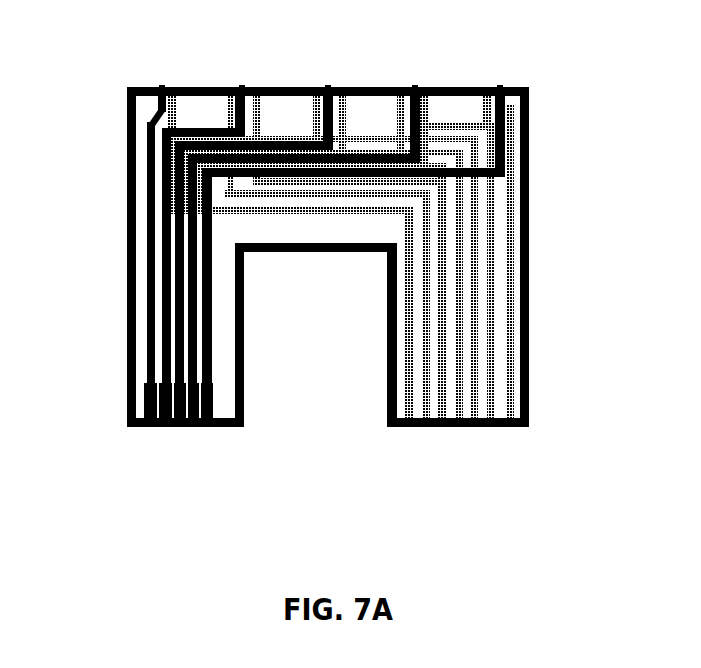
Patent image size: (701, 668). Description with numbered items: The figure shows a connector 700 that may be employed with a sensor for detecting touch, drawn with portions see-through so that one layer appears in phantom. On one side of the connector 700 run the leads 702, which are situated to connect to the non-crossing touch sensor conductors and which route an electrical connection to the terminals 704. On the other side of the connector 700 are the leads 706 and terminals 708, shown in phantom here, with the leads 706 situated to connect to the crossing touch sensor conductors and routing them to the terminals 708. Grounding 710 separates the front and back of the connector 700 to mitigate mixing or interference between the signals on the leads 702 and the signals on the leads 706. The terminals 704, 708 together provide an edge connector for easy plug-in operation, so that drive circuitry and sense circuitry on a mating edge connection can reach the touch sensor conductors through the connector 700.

The connector 700 is at (128, 273).
The leads 702 is at (302, 140).
The terminals 704 is at (172, 429).
The leads 706 is at (370, 148).
The terminals 708 is at (492, 398).
The grounding 710 is at (302, 225).